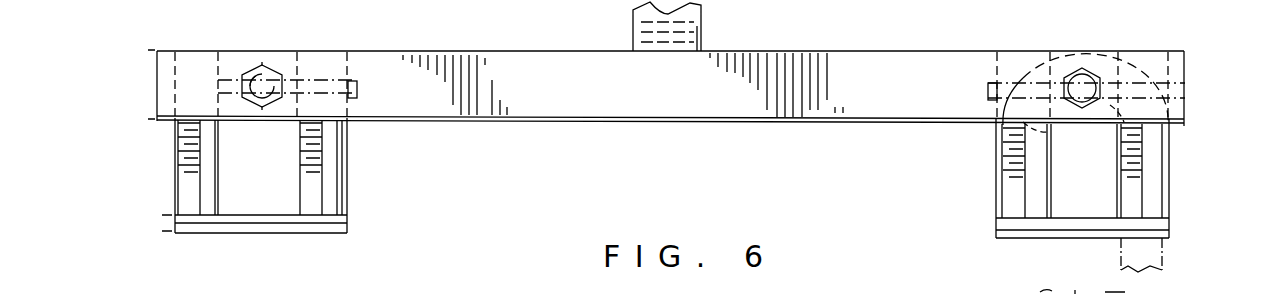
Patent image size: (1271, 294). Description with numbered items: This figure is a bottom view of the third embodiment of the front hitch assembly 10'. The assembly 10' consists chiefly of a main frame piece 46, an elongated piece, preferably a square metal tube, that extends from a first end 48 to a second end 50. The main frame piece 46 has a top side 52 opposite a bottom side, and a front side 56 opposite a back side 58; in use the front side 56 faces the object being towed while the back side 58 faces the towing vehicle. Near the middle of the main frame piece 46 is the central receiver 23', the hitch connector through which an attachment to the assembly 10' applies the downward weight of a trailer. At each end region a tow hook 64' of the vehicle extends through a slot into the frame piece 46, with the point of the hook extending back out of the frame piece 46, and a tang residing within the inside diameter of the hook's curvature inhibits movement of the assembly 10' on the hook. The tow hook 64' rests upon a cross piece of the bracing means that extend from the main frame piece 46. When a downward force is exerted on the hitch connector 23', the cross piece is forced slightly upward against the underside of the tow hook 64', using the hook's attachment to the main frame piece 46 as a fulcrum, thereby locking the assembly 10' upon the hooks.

The front hitch assembly 10' is at (671, 137).
The central receiver 23' is at (718, 25).
The main frame piece 46 is at (560, 62).
The first end 48 is at (156, 84).
The second end 50 is at (1186, 87).
The top side 52 is at (607, 98).
The front side 56 is at (505, 50).
The back side 58 is at (460, 122).
The tow hook 64' is at (1178, 256).